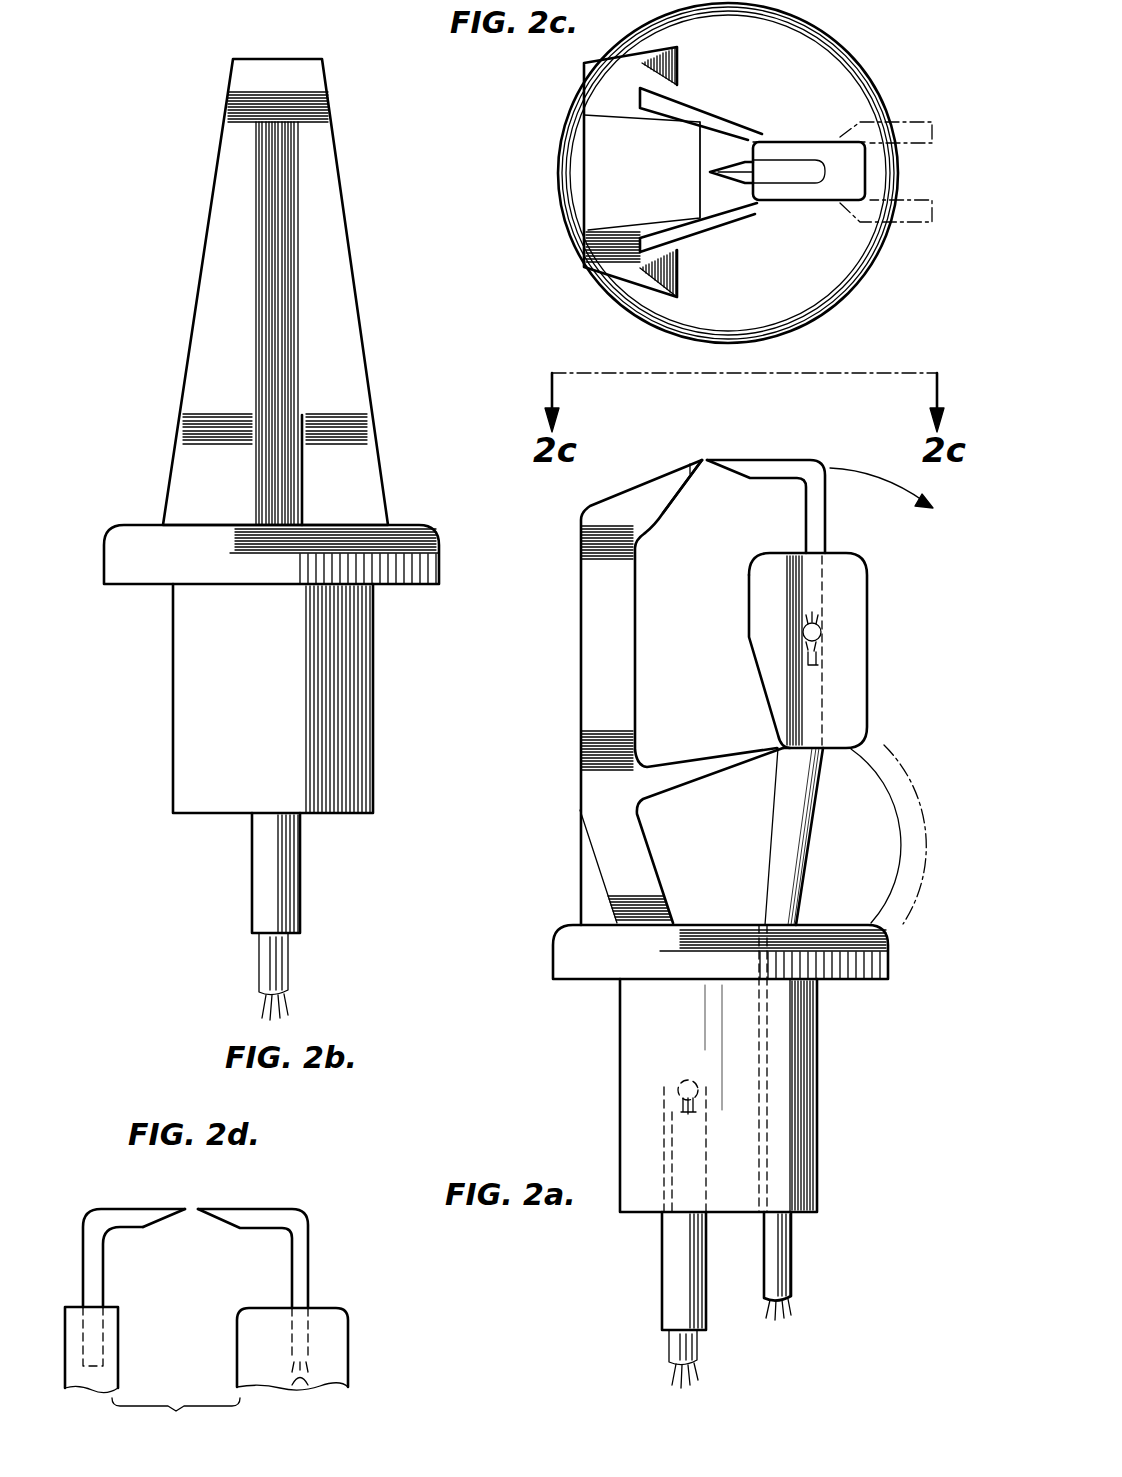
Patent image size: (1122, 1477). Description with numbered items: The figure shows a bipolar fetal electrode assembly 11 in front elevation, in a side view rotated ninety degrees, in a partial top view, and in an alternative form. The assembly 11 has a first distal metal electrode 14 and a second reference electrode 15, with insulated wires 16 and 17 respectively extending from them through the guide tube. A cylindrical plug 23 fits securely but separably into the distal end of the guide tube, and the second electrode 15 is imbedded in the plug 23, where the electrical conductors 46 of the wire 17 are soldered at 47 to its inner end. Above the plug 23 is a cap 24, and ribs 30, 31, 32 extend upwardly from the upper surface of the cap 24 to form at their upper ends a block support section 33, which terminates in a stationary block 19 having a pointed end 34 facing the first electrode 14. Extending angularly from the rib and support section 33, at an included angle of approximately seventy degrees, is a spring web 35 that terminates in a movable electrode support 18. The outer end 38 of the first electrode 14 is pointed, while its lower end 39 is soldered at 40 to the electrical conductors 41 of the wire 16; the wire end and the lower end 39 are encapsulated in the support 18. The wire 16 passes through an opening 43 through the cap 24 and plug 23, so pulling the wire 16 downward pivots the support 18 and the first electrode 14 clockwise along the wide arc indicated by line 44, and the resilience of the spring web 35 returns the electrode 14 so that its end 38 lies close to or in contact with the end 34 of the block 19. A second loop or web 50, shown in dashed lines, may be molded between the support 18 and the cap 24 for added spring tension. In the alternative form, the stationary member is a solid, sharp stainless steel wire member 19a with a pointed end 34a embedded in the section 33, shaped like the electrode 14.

In FIG. 2b, the electrode assembly 11 is at (195, 204).
In FIG. 2c, the electrode assembly 11 is at (786, 215).
In FIG. 2a, the electrode assembly 11 is at (880, 668).
In FIG. 2c, the first electrode 14 is at (800, 158).
In FIG. 2a, the first electrode 14 is at (791, 459).
In FIG. 2d, the first electrode 14 is at (276, 1209).
In FIG. 2b, the second electrode 15 is at (252, 860).
In FIG. 2a, the second electrode 15 is at (662, 1256).
In FIG. 2a, the wire 16 is at (792, 1240).
In FIG. 2b, the wire 17 is at (262, 958).
In FIG. 2a, the wire 17 is at (669, 1347).
In FIG. 2c, the movable electrode support 18 is at (856, 204).
In FIG. 2a, the movable electrode support 18 is at (750, 605).
In FIG. 2d, the movable electrode support 18 is at (248, 1310).
In FIG. 2b, the stationary block 19 is at (245, 75).
In FIG. 2c, the stationary block 19 is at (706, 198).
In FIG. 2a, the stationary block 19 is at (658, 482).
In FIG. 2d, the member 19a is at (100, 1207).
In FIG. 2b, the plug 23 is at (370, 656).
In FIG. 2a, the plug 23 is at (818, 1034).
In FIG. 2b, the cap 24 is at (440, 545).
In FIG. 2c, the cap 24 is at (858, 92).
In FIG. 2a, the cap 24 is at (890, 948).
In FIG. 2b, the rib 30 is at (372, 468).
In FIG. 2c, the rib 30 is at (652, 283).
In FIG. 2a, the rib 30 is at (646, 858).
In FIG. 2b, the rib 31 is at (258, 497).
In FIG. 2a, the rib 31 is at (580, 857).
In FIG. 2b, the rib 32 is at (190, 463).
In FIG. 2c, the block support section 33 is at (584, 250).
In FIG. 2a, the block support section 33 is at (581, 713).
In FIG. 2d, the block support section 33 is at (118, 1310).
In FIG. 2c, the pointed end 34 is at (703, 120).
In FIG. 2a, the pointed end 34 is at (703, 466).
In FIG. 2d, the pointed end 34a is at (172, 1209).
In FIG. 2c, the spring web 35 is at (722, 116).
In FIG. 2a, the spring web 35 is at (727, 760).
In FIG. 2c, the outer end 38 is at (754, 142).
In FIG. 2a, the outer end 38 is at (724, 460).
In FIG. 2d, the outer end 38 is at (222, 1209).
In FIG. 2a, the lower end 39 is at (830, 586).
In FIG. 2d, the lower end 39 is at (306, 1330).
In FIG. 2a, the solder 40 is at (822, 630).
In FIG. 2a, the electrical conductors 41 is at (824, 658).
In FIG. 2a, the opening 43 is at (822, 1012).
In FIG. 2a, the line 44 is at (855, 468).
In FIG. 2a, the electrical conductors 46 is at (676, 1112).
In FIG. 2a, the solder 47 is at (679, 1084).
In FIG. 2c, the second loop or web 50 is at (932, 148).
In FIG. 2a, the second loop or web 50 is at (898, 757).